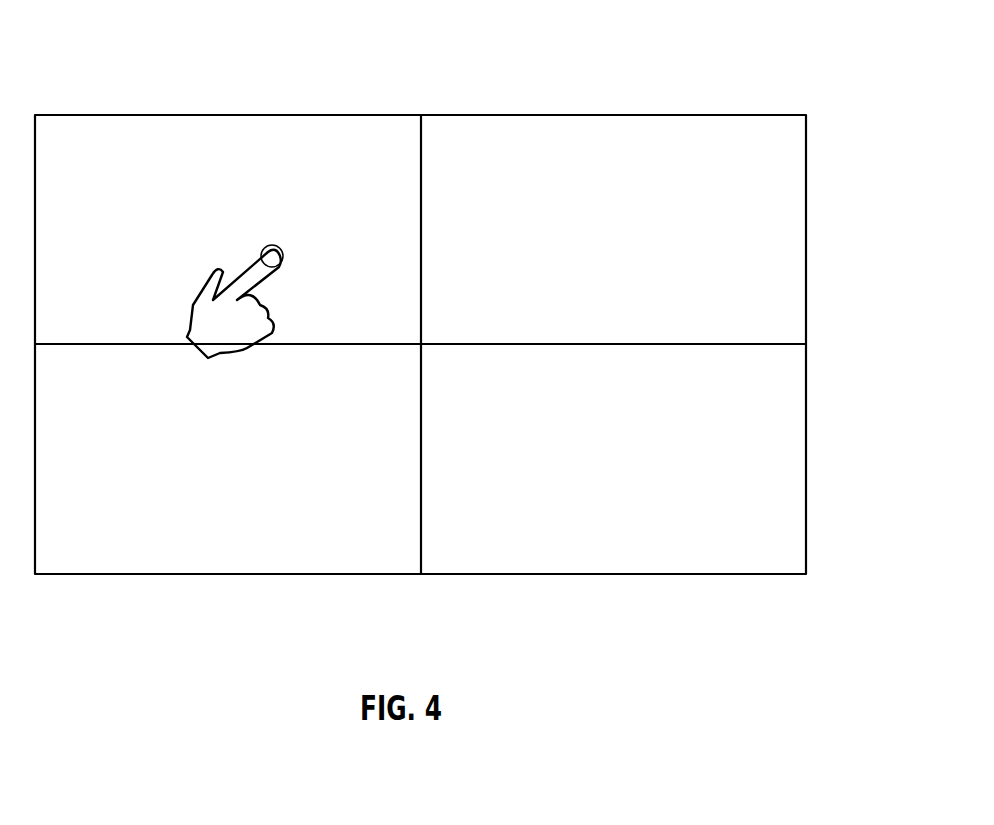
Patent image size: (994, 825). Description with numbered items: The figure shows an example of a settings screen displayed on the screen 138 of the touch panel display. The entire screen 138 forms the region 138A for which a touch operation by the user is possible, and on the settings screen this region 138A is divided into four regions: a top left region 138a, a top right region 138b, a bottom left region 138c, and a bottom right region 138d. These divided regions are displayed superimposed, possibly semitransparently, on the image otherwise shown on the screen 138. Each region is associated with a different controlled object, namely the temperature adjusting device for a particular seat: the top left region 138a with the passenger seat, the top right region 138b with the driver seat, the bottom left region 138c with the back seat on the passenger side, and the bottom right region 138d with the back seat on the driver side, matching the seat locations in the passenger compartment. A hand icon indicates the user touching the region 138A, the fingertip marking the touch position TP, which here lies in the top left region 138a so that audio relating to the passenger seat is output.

The screen 138 is at (806, 200).
The region for which a touch operation is possible 138A is at (763, 295).
The top left region 138a is at (387, 140).
The top right region 138b is at (607, 140).
The bottom left region 138c is at (207, 555).
The bottom right region 138d is at (602, 555).
The touch position TP is at (271, 245).